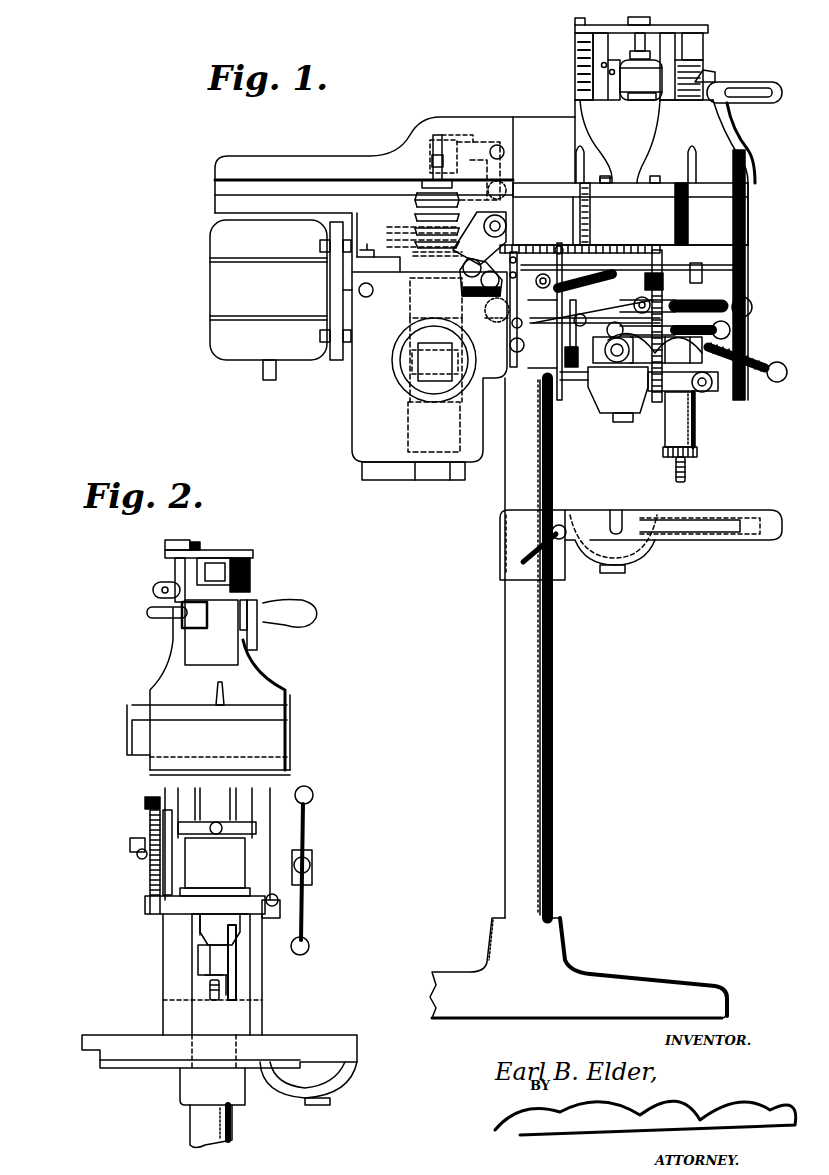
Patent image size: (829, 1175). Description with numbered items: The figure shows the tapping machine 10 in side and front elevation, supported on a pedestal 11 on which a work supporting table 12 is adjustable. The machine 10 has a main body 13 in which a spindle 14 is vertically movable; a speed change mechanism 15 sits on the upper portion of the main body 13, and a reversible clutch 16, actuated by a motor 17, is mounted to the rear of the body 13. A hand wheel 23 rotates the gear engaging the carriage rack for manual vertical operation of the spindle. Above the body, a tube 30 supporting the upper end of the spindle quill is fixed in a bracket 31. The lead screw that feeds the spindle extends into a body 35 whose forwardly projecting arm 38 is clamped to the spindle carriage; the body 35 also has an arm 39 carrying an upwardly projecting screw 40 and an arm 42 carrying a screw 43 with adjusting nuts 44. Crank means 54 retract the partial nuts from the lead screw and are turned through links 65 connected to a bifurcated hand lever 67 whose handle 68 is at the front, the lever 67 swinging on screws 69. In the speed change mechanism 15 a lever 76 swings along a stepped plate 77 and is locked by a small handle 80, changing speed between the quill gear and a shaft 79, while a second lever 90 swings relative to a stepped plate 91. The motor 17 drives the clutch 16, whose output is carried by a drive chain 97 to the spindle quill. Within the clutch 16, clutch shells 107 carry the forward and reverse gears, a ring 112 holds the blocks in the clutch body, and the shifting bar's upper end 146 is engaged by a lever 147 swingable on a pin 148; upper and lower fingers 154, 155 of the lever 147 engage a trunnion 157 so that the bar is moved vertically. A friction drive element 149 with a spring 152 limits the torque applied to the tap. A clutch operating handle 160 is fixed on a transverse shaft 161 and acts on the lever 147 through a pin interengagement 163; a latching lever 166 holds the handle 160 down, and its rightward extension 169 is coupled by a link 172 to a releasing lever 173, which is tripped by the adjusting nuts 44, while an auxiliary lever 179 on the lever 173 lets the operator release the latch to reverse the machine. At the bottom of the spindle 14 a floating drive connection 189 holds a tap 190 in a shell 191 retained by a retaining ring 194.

In FIG. 1, the tapping machine 10 is at (255, 150).
In FIG. 1, the pedestal 11 is at (532, 744).
In FIG. 2, the pedestal 11 is at (192, 1126).
In FIG. 1, the work supporting table 12 is at (683, 540).
In FIG. 2, the work supporting table 12 is at (300, 1042).
In FIG. 1, the main body 13 is at (748, 210).
In FIG. 2, the main body 13 is at (222, 871).
In FIG. 1, the spindle 14 is at (709, 390).
In FIG. 1, the speed change mechanism 15 is at (712, 138).
In FIG. 2, the speed change mechanism 15 is at (300, 705).
In FIG. 1, the reversible clutch 16 is at (348, 410).
In FIG. 2, the reversible clutch 16 is at (152, 990).
In FIG. 1, the motor 17 is at (225, 285).
In FIG. 2, the hand wheel 23 is at (312, 865).
In FIG. 1, the tube 30 is at (702, 50).
In FIG. 2, the tube 30 is at (205, 574).
In FIG. 1, the bracket 31 is at (585, 25).
In FIG. 2, the bracket 31 is at (226, 550).
In FIG. 1, the body 35 is at (602, 412).
In FIG. 2, the forwardly projecting arm 38 is at (212, 910).
In FIG. 2, the arm 39 is at (282, 915).
In FIG. 2, the upwardly projecting screw 40 is at (290, 832).
In FIG. 1, the arm 42 is at (655, 403).
In FIG. 2, the arm 42 is at (160, 904).
In FIG. 1, the upwardly projecting screw 43 is at (690, 370).
In FIG. 2, the upwardly projecting screw 43 is at (150, 881).
In FIG. 1, the adjusting nuts 44 is at (668, 268).
In FIG. 2, the adjusting nuts 44 is at (140, 805).
In FIG. 1, the crank means 54 is at (598, 366).
In FIG. 1, the links 65 is at (556, 378).
In FIG. 1, the bifurcated hand lever 67 is at (620, 270).
In FIG. 2, the bifurcated hand lever 67 is at (240, 788).
In FIG. 1, the handle 68 is at (740, 296).
In FIG. 2, the handle 68 is at (198, 788).
In FIG. 1, the screws 69 is at (648, 262).
In FIG. 1, the lever 76 is at (758, 84).
In FIG. 2, the lever 76 is at (185, 617).
In FIG. 1, the stepped plate 77 is at (706, 80).
In FIG. 1, the shaft 79 is at (632, 45).
In FIG. 2, the small handle 80 is at (150, 605).
In FIG. 1, the lever 90 is at (622, 78).
In FIG. 2, the lever 90 is at (280, 604).
In FIG. 1, the stepped plate 91 is at (600, 68).
In FIG. 2, the stepped plate 91 is at (262, 640).
In FIG. 1, the drive chain 97 is at (592, 245).
In FIG. 1, the clutch shells 107 is at (410, 292).
In FIG. 1, the ring 112 is at (415, 362).
In FIG. 1, the upper end 146 is at (437, 134).
In FIG. 1, the lever 147 is at (470, 141).
In FIG. 1, the pin 148 is at (498, 145).
In FIG. 1, the friction drive element 149 is at (380, 225).
In FIG. 1, the spring 152 is at (420, 209).
In FIG. 1, the upper fingers 154 is at (428, 145).
In FIG. 1, the lower fingers 155 is at (422, 183).
In FIG. 1, the trunnion 157 is at (432, 161).
In FIG. 1, the clutch operating handle 160 is at (768, 366).
In FIG. 1, the transverse shaft 161 is at (507, 224).
In FIG. 1, the pin interengagement 163 is at (506, 186).
In FIG. 1, the latching lever 166 is at (465, 290).
In FIG. 1, the rightward extension 169 is at (696, 423).
In FIG. 1, the link 172 is at (510, 330).
In FIG. 1, the releasing lever 173 is at (733, 332).
In FIG. 2, the releasing lever 173 is at (135, 852).
In FIG. 1, the auxiliary lever 179 is at (730, 313).
In FIG. 2, the floating drive connection 189 is at (200, 952).
In FIG. 1, the tap 190 is at (686, 475).
In FIG. 2, the tap 190 is at (222, 990).
In FIG. 1, the shell 191 is at (697, 438).
In FIG. 2, the shell 191 is at (240, 960).
In FIG. 1, the retaining ring 194 is at (697, 452).